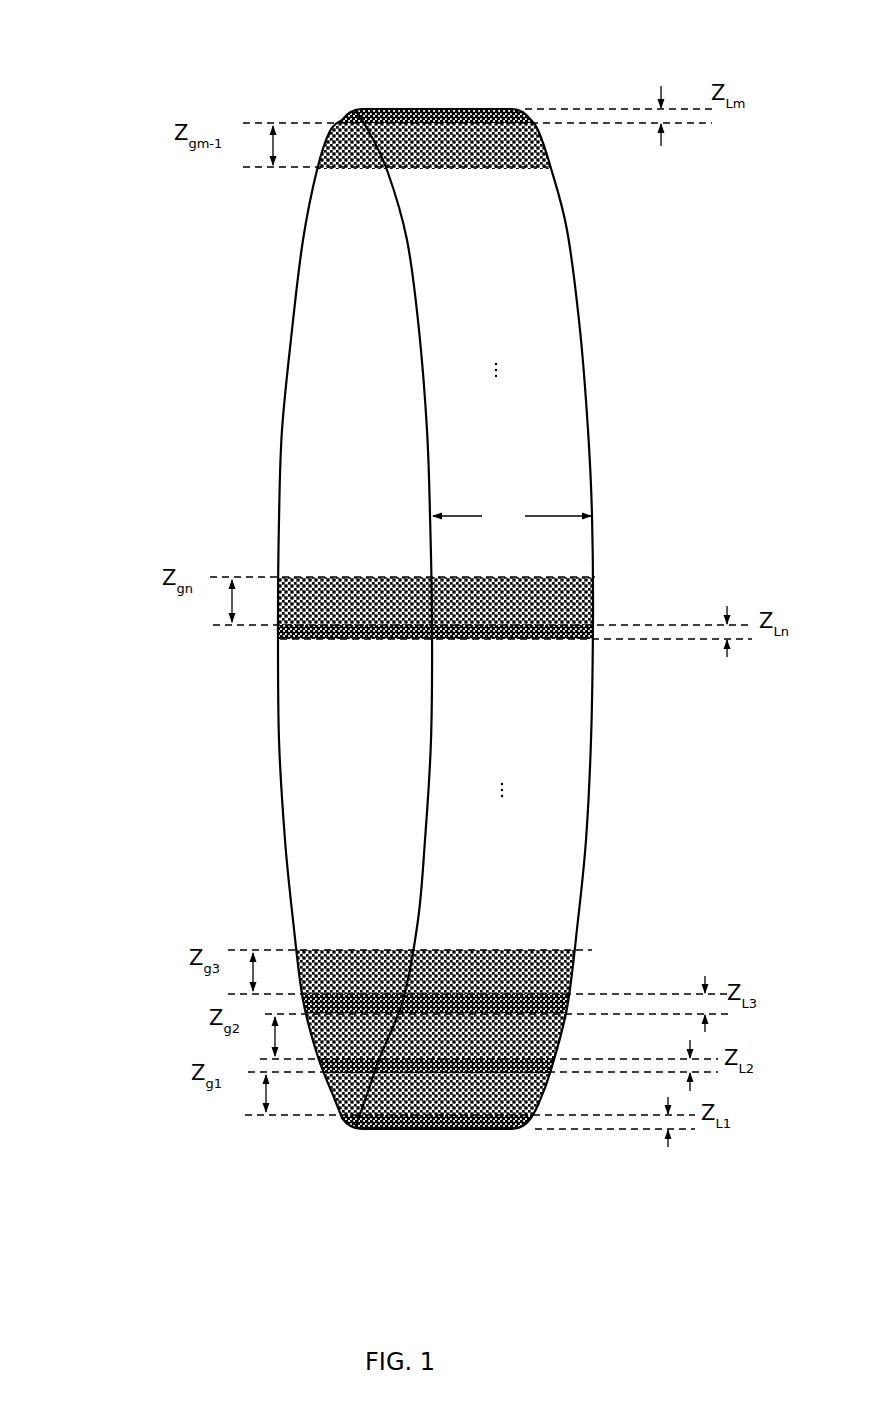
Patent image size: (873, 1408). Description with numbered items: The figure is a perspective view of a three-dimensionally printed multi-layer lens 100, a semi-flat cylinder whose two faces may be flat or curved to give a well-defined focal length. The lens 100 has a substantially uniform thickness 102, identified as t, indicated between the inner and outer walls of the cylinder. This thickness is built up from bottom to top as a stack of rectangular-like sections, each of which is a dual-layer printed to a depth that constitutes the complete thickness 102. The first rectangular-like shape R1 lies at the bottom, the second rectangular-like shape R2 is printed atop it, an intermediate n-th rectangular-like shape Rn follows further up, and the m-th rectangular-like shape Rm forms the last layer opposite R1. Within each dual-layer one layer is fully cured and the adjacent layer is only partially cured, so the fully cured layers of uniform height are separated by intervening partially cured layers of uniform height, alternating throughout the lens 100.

The lens 100 is at (146, 24).
The thickness 102 is at (522, 495).
The m-th rectangular-like shape Rm is at (359, 153).
The n-th rectangular-like shape Rn is at (350, 592).
The second rectangular-like shape R2 is at (333, 1027).
The first rectangular-like shape R1 is at (351, 1092).
The thickness t is at (512, 514).